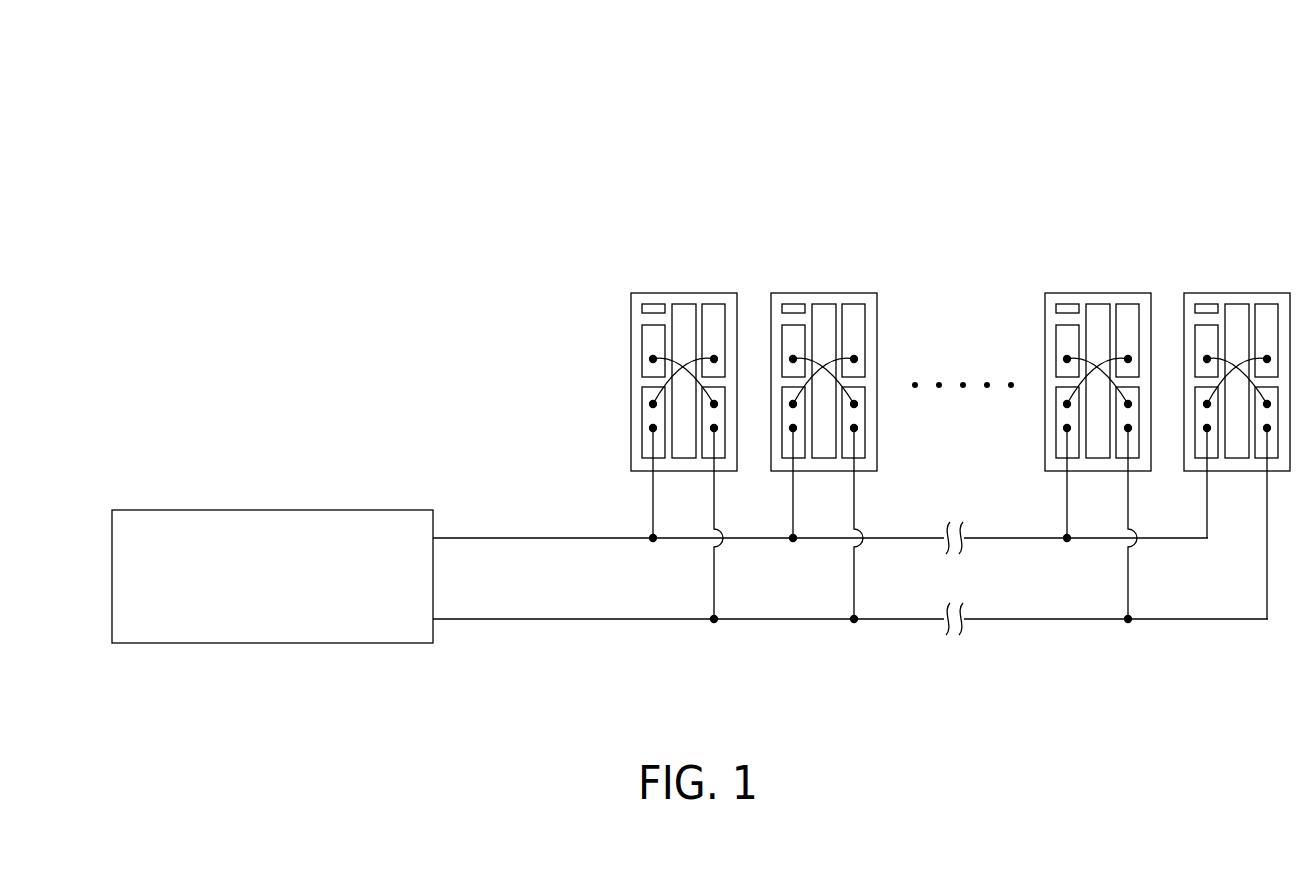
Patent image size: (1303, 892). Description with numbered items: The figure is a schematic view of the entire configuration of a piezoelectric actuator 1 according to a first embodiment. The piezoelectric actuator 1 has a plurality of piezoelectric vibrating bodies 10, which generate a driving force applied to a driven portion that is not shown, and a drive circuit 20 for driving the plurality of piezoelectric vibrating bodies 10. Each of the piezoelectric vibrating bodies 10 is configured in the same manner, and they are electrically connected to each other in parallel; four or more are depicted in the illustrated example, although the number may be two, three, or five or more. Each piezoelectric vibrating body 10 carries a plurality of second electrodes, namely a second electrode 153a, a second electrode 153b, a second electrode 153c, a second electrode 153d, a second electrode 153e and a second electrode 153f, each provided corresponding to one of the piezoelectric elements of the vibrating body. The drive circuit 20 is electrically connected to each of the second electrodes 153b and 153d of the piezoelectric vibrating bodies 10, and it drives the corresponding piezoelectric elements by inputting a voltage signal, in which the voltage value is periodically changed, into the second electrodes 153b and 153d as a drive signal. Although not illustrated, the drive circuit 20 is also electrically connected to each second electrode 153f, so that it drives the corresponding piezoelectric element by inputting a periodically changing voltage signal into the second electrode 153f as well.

The piezoelectric actuator 1 is at (1110, 163).
The piezoelectric vibrating body 10 is at (911, 411).
The drive circuit 20 is at (222, 510).
The second electrode 153a is at (642, 345).
The second electrode 153b is at (642, 417).
The second electrode 153c is at (716, 300).
The second electrode 153d is at (725, 440).
The second electrode 153e is at (650, 299).
The second electrode 153f is at (682, 300).